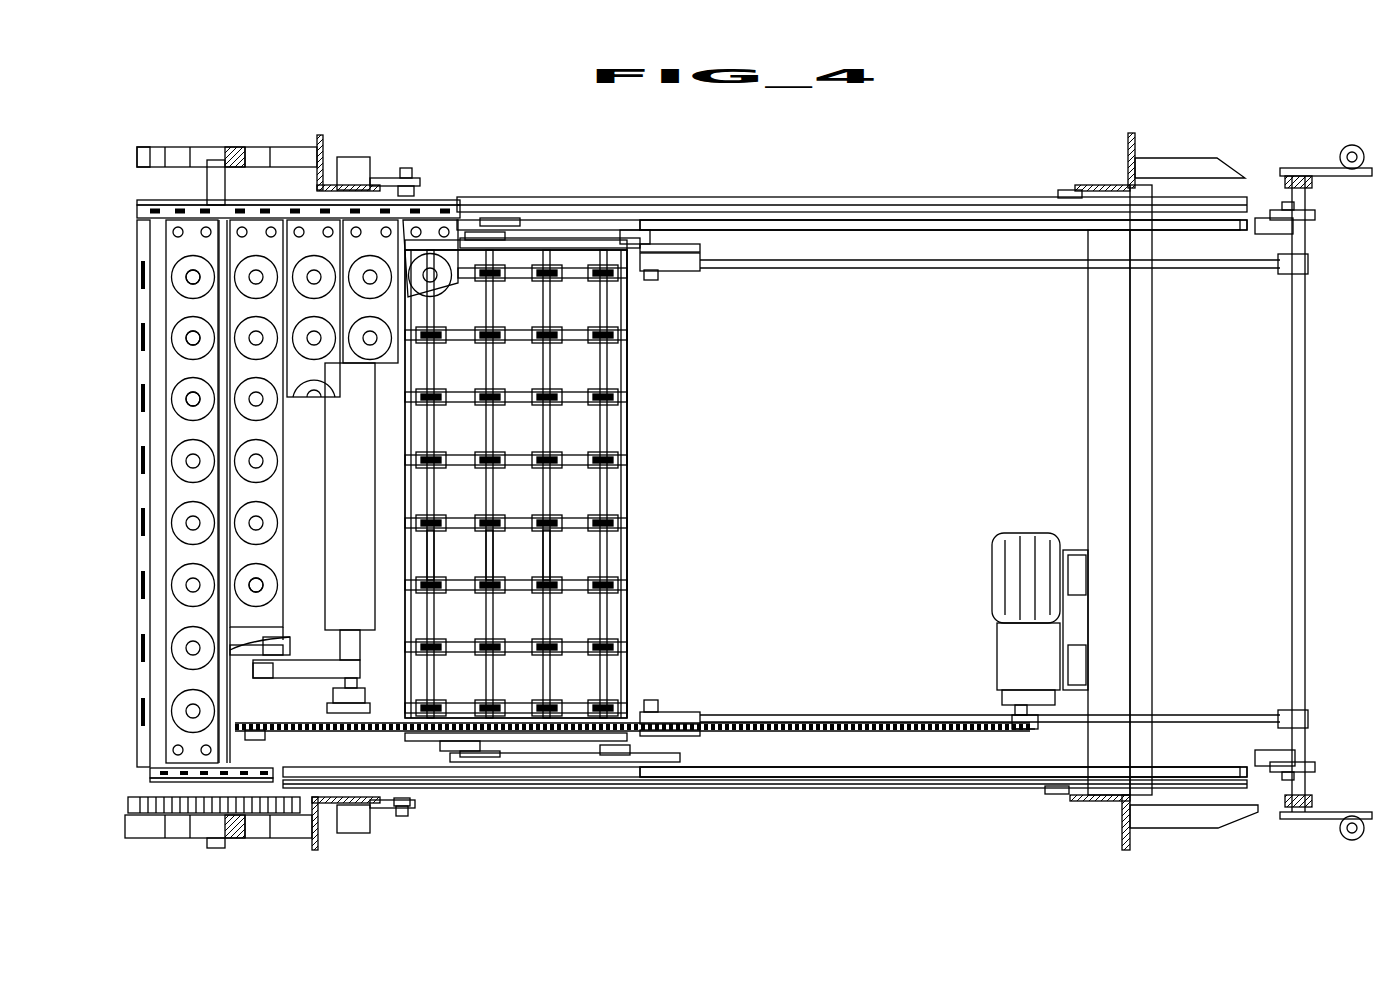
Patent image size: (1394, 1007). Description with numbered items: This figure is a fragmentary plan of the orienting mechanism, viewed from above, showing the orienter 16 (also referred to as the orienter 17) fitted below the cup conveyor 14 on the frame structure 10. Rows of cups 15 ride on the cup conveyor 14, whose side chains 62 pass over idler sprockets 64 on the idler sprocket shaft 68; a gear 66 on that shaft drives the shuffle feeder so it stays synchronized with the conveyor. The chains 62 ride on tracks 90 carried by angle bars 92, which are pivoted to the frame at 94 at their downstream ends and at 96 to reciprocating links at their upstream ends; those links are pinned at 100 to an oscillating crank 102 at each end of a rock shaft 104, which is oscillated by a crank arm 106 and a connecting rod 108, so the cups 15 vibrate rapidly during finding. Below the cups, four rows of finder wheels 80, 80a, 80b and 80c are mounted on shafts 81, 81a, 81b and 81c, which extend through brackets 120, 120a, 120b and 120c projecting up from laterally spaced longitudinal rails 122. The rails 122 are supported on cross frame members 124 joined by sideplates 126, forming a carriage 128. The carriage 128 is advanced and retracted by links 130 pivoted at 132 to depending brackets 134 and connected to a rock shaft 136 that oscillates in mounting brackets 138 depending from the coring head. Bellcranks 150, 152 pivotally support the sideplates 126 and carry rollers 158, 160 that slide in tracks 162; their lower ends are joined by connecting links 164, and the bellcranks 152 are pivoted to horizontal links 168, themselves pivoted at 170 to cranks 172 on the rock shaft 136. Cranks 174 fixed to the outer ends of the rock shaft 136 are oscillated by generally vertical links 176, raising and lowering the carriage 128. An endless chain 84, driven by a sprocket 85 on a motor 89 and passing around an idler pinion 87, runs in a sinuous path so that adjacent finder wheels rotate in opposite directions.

The frame structure 10 is at (150, 143).
The cup conveyor 14 is at (137, 226).
The cups 15 is at (312, 398).
The orienter 16 is at (193, 399).
The orienter 17 is at (655, 335).
The cup conveyor side chains 62 is at (450, 208).
The idler sprockets 64 is at (185, 205).
The gear 66 is at (128, 803).
The idler sprocket shaft 68 is at (227, 183).
The finder wheels 80 is at (420, 468).
The finder wheels 80a is at (478, 470).
The finder wheels 80b is at (536, 470).
The finder wheels 80c is at (595, 470).
The finder-wheel shaft 81 is at (430, 551).
The finder-wheel shaft 81a is at (488, 551).
The finder-wheel shaft 81b is at (545, 551).
The finder-wheel shaft 81c is at (602, 554).
The endless chain 84 is at (305, 733).
The sprocket 85 is at (1012, 730).
The idler pinion 87 is at (250, 740).
The motor 89 is at (1028, 540).
The tracks 90 is at (795, 200).
The angle bars 92 is at (840, 212).
The pivot 94 is at (1065, 190).
The pivot 96 is at (416, 182).
The pin 100 is at (412, 178).
The oscillating crank 102 is at (365, 178).
The rock shaft 104 is at (348, 157).
The crank arm 106 is at (305, 688).
The connecting rod 108 is at (265, 645).
The brackets 120 is at (455, 410).
The brackets 120a is at (452, 345).
The brackets 120b is at (510, 345).
The brackets 120c is at (568, 345).
The longitudinal rails 122 is at (578, 280).
The cross frame members 124 is at (373, 450).
The sideplates 126 is at (598, 245).
The carriage 128 is at (640, 316).
The links 130 is at (1090, 268).
The pivot 132 is at (662, 278).
The brackets 134 is at (670, 250).
The rock shaft 136 is at (1290, 372).
The mounting brackets 138 is at (1285, 182).
The bellcrank 150 is at (480, 240).
The bellcrank 152 is at (640, 232).
The roller 158 is at (500, 203).
The roller 160 is at (672, 205).
The tracks 162 is at (722, 220).
The connecting links 164 is at (540, 240).
The links 168 is at (915, 225).
The pivot 170 is at (1265, 236).
The cranks 172 is at (1312, 218).
The cranks 174 is at (1320, 168).
The links 176 is at (1360, 145).